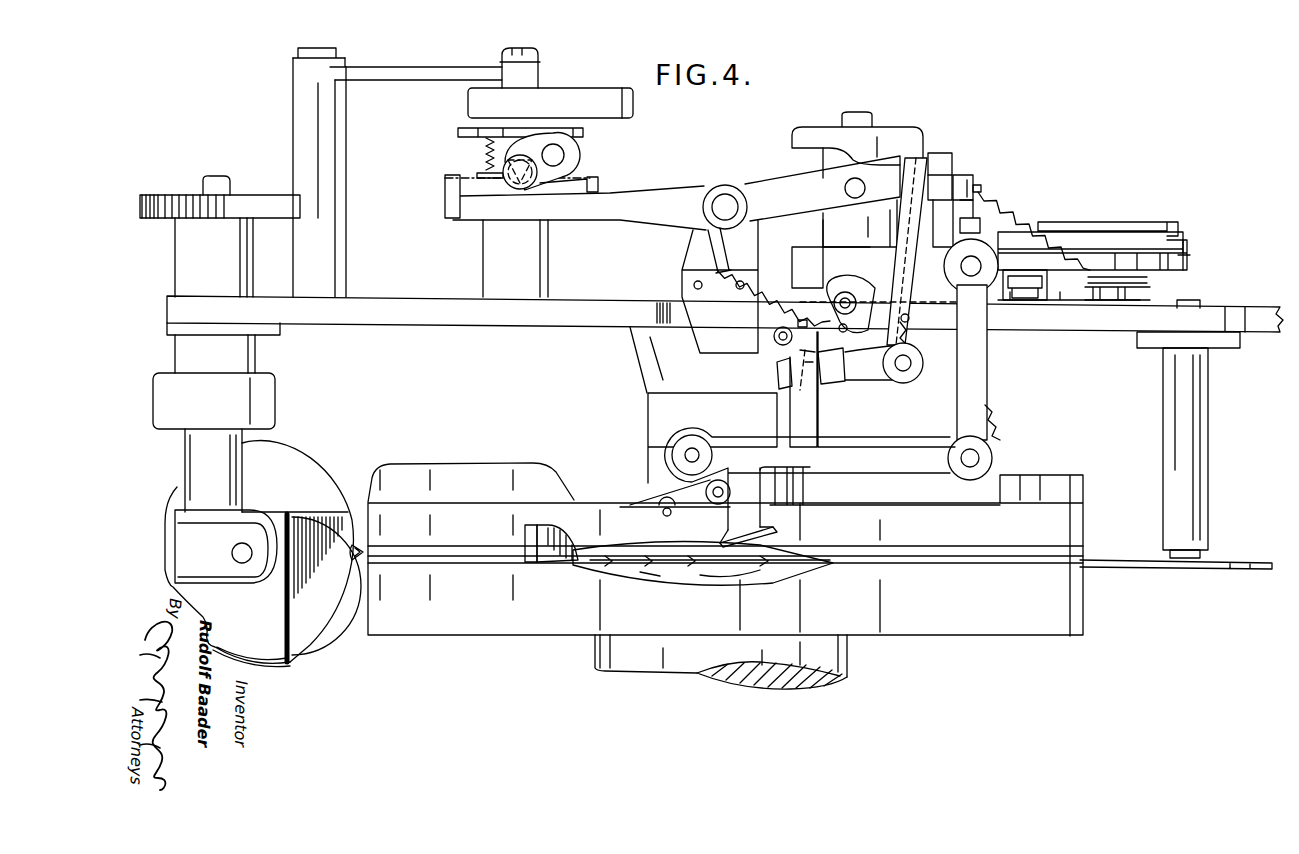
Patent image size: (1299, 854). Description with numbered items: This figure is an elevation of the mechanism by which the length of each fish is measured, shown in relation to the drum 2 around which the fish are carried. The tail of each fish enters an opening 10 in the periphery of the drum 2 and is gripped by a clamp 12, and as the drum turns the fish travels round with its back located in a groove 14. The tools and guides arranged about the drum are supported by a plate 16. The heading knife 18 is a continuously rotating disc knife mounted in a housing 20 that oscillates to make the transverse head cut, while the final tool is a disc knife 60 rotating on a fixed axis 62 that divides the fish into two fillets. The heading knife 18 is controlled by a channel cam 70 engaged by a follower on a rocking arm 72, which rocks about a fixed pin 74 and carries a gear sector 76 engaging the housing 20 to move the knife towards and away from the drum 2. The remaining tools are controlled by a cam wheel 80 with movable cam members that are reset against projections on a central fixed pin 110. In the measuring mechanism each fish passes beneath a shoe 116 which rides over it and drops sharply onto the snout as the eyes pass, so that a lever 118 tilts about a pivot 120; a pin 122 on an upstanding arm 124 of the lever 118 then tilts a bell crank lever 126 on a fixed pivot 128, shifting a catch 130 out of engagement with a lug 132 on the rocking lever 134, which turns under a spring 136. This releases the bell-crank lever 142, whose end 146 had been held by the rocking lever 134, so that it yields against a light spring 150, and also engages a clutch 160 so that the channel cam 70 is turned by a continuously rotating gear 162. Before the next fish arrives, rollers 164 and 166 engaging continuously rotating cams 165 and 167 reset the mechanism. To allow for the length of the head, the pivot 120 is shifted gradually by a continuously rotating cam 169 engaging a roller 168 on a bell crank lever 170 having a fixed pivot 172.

The drum 2 is at (1064, 590).
The opening 10 is at (533, 555).
The clamp 12 is at (560, 530).
The groove 14 is at (900, 568).
The plate 16 is at (1228, 318).
The heading knife 18 is at (308, 630).
The housing 20 is at (262, 395).
The disc knife 60 is at (1235, 569).
The fixed axis 62 is at (1200, 495).
The channel cam 70 is at (552, 96).
The rocking arm 72 is at (400, 77).
The fixed pin 74 is at (298, 54).
The gear sector 76 is at (243, 197).
The cam wheel 80 is at (1187, 259).
The central fixed pin 110 is at (1045, 305).
The shoe 116 is at (762, 538).
The lever 118 is at (857, 458).
The pivot 120 is at (978, 455).
The pin 122 is at (826, 378).
The upstanding arm 124 is at (808, 418).
The bell crank lever 126 is at (868, 368).
The fixed pivot 128 is at (908, 368).
The catch 130 is at (922, 165).
The lug 132 is at (950, 175).
The rocking lever 134 is at (648, 192).
The spring 136 is at (767, 290).
The bell-crank lever 142 is at (1087, 240).
The end 146 is at (975, 182).
The light spring 150 is at (1000, 198).
The clutch 160 is at (545, 183).
The continuously rotating gear 162 is at (590, 180).
The roller 164 is at (818, 160).
The cam 165 is at (830, 143).
The roller 166 is at (672, 442).
The cam 167 is at (518, 482).
The roller 168 is at (862, 322).
The continuously rotating cam 169 is at (823, 287).
The bell crank lever 170 is at (988, 370).
The fixed pivot 172 is at (978, 272).